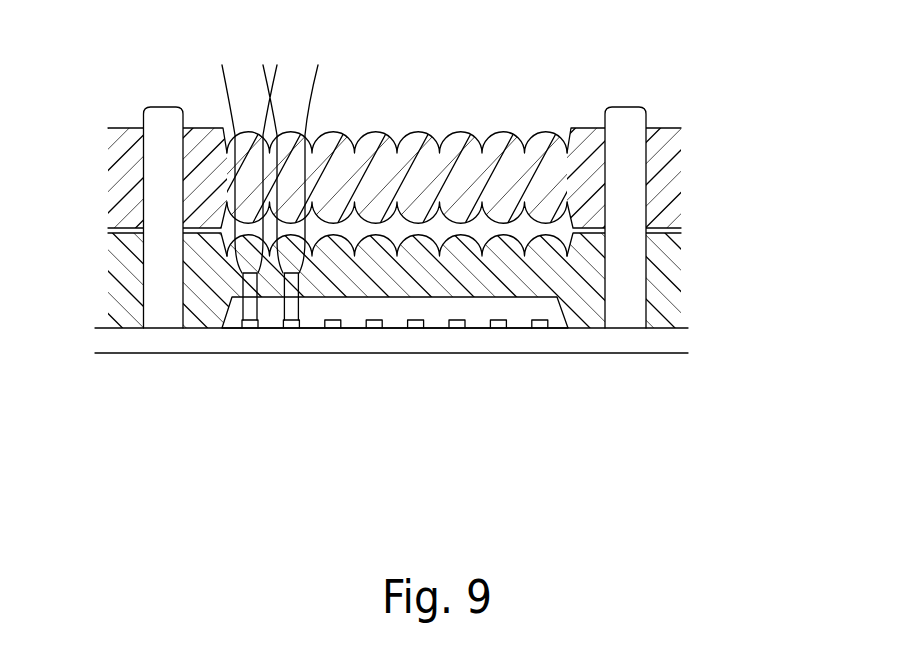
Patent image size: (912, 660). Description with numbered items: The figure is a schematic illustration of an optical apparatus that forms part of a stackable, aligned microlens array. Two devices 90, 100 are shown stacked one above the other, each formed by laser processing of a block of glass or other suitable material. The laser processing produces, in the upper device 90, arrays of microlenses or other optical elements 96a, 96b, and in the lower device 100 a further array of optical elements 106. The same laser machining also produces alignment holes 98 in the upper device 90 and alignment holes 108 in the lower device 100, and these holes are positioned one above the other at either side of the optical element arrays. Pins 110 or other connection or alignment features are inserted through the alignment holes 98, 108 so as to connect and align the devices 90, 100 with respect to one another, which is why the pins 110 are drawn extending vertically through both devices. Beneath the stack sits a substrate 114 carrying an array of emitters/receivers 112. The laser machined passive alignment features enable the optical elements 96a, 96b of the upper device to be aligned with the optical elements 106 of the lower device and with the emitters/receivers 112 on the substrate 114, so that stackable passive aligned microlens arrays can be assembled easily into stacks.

The device 90 is at (750, 175).
The optical elements 96a is at (373, 132).
The optical elements 96b is at (415, 223).
The alignment holes 98 is at (143, 160).
The device 100 is at (750, 302).
The optical elements 106 is at (383, 236).
The alignment holes 108 is at (143, 242).
The pins 110 is at (162, 106).
The array of emitters/receivers 112 is at (456, 329).
The substrate 114 is at (113, 342).